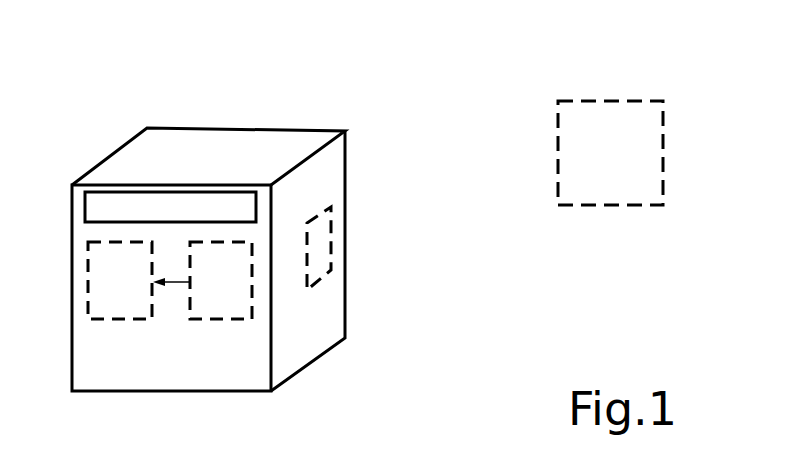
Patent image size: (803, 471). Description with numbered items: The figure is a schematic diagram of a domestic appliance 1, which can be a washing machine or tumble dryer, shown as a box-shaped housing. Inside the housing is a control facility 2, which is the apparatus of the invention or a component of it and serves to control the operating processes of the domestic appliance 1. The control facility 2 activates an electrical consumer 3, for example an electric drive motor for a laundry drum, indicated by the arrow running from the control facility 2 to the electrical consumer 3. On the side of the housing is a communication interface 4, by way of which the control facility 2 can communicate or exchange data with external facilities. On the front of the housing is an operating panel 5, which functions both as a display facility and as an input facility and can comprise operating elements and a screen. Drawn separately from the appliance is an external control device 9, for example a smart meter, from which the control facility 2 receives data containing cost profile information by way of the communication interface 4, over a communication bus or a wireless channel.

The domestic appliance 1 is at (94, 92).
The control facility 2 is at (207, 320).
The electrical consumer 3 is at (122, 320).
The communication interface 4 is at (332, 255).
The operating panel 5 is at (93, 210).
The external control device 9 is at (597, 205).